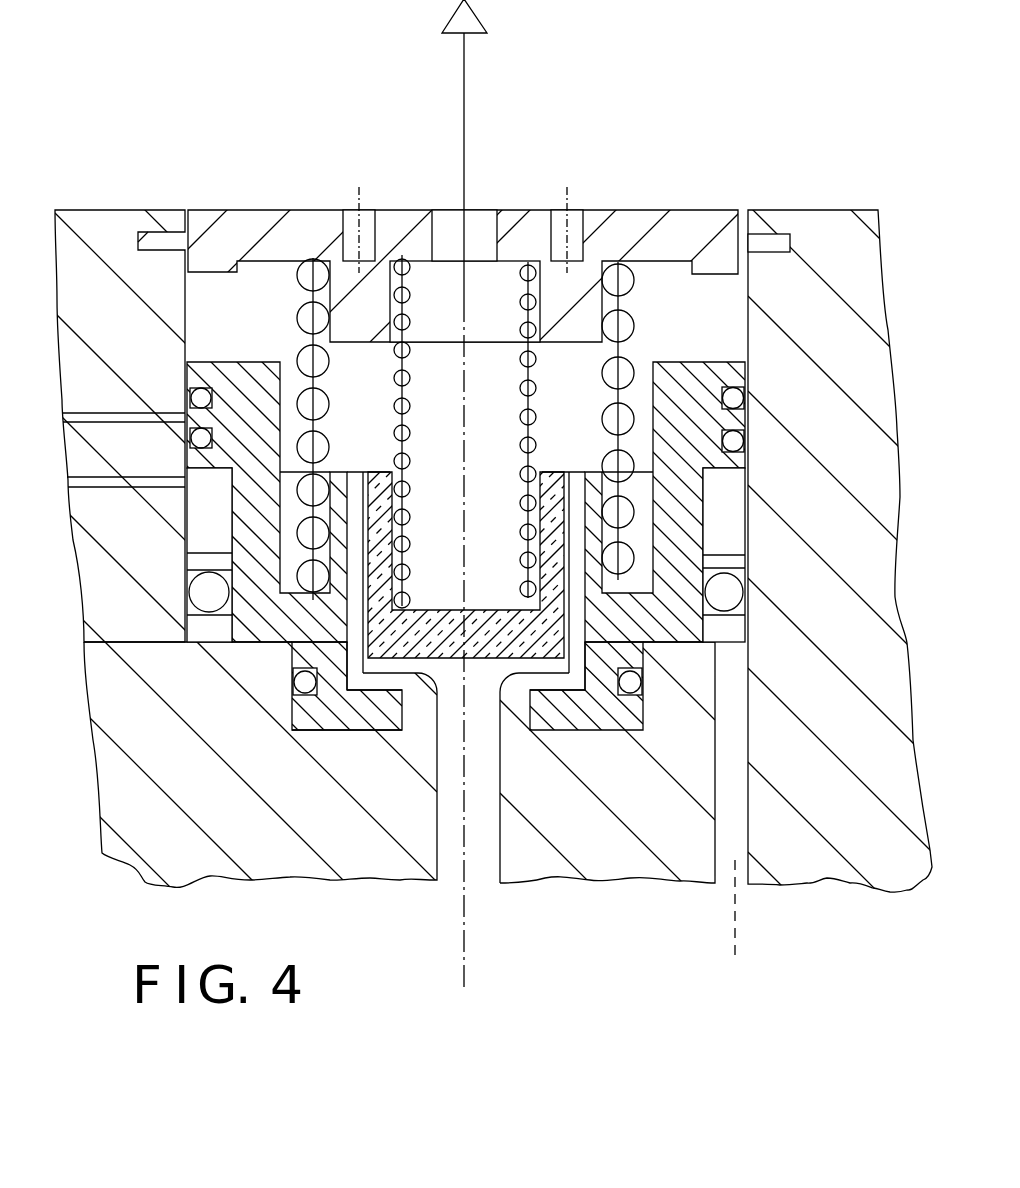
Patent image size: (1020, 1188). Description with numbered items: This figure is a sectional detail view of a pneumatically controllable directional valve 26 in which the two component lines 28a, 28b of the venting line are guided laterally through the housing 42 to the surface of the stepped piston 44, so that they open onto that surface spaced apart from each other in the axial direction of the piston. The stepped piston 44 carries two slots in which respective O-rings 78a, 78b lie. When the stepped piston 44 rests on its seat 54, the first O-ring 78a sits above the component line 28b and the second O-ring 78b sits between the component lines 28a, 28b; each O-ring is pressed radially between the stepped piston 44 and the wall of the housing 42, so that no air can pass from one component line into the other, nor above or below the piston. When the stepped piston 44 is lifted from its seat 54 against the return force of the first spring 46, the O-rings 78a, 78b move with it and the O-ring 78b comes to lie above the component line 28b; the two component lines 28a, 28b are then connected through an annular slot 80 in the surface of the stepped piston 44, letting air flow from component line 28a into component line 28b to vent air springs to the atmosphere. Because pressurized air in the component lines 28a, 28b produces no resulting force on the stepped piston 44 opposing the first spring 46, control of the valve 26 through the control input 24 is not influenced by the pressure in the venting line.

The control input 24 is at (723, 863).
The pneumatically controllable directional valve 26 is at (808, 252).
The component line 28a is at (92, 480).
The component line 28b is at (115, 413).
The housing 42 is at (850, 532).
The stepped piston 44 is at (258, 613).
The first spring 46 is at (300, 272).
The seat 54 is at (297, 647).
The O-ring 78a is at (200, 398).
The O-ring 78b is at (160, 478).
The annular slot 80 is at (182, 550).